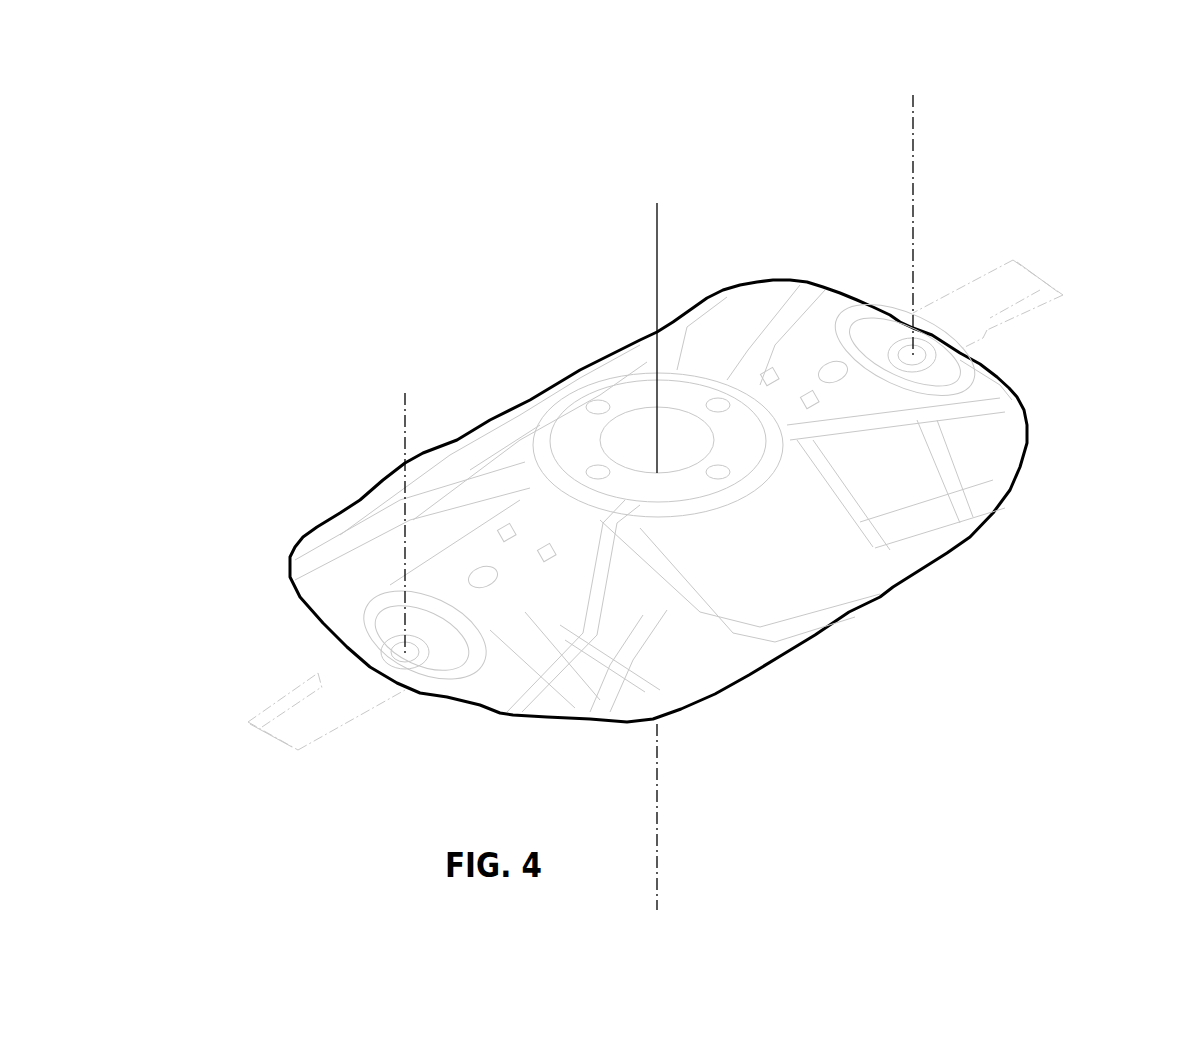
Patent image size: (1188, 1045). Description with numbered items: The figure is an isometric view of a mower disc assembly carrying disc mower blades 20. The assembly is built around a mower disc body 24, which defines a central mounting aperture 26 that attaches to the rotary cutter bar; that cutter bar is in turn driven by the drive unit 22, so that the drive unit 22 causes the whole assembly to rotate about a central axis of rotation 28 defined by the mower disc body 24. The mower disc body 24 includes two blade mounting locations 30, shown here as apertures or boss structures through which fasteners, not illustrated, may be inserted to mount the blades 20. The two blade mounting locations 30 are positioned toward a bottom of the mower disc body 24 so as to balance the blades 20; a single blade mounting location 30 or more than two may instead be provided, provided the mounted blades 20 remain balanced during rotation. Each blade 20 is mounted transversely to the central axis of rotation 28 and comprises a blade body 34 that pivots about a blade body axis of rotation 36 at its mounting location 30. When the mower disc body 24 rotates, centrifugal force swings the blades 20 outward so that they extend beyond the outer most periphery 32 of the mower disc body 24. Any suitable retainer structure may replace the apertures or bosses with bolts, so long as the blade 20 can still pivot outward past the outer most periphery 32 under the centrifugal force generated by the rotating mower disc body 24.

The disc mower blade 20 is at (295, 713).
The drive unit 22 is at (1008, 433).
The mower disc body 24 is at (532, 420).
The mounting aperture 26 is at (626, 422).
The central axis of rotation 28 is at (657, 241).
The blade mounting location 30 is at (387, 641).
The outer most periphery 32 is at (1010, 383).
The blade body 34 is at (288, 743).
The blade body axis of rotation 36 is at (405, 412).